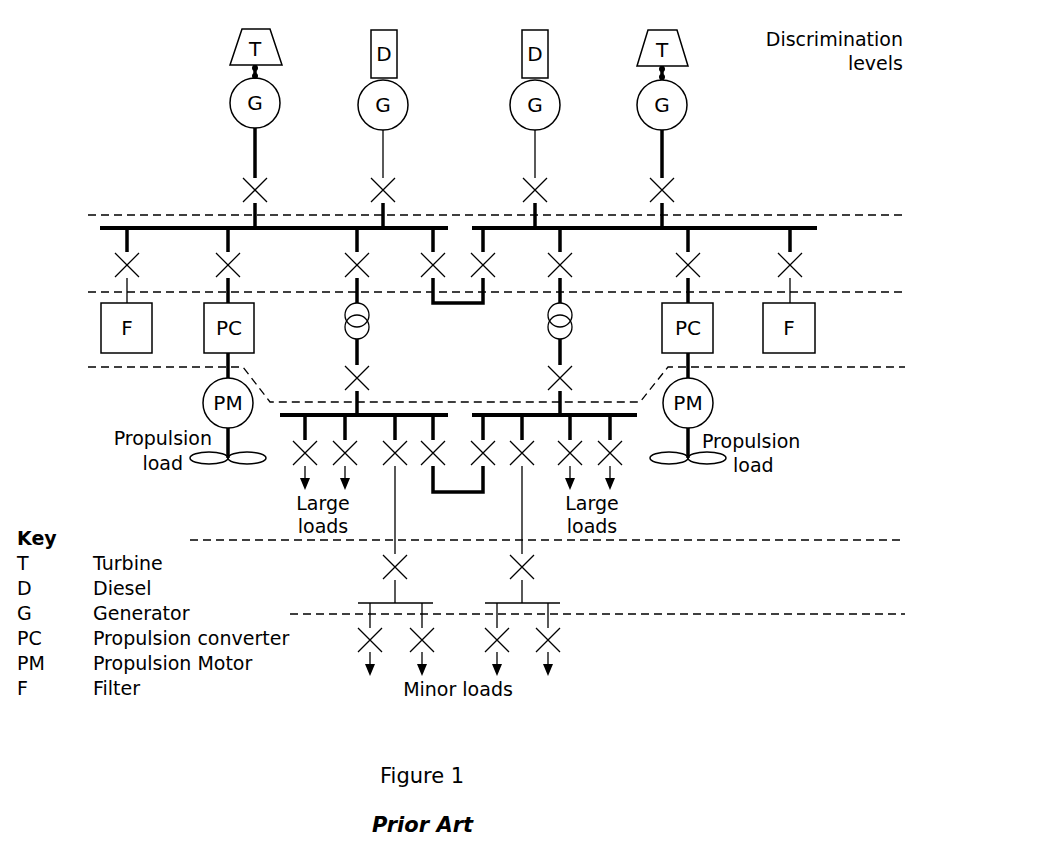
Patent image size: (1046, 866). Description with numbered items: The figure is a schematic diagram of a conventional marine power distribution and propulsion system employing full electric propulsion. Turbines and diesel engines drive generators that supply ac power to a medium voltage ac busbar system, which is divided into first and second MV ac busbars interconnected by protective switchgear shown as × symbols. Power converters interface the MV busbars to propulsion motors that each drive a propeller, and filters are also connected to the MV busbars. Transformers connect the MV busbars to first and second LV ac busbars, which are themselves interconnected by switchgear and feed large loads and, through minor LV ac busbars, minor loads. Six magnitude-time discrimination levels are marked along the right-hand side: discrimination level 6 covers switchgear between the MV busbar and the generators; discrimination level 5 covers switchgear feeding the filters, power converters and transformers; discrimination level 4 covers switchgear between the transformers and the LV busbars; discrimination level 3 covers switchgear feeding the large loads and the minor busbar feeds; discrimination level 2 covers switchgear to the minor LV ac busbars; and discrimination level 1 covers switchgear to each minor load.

The discrimination level 1 is at (631, 635).
The discrimination level 2 is at (597, 591).
The discrimination level 3 is at (547, 494).
The discrimination level 4 is at (496, 363).
The discrimination level 5 is at (496, 271).
The discrimination level 6 is at (496, 194).